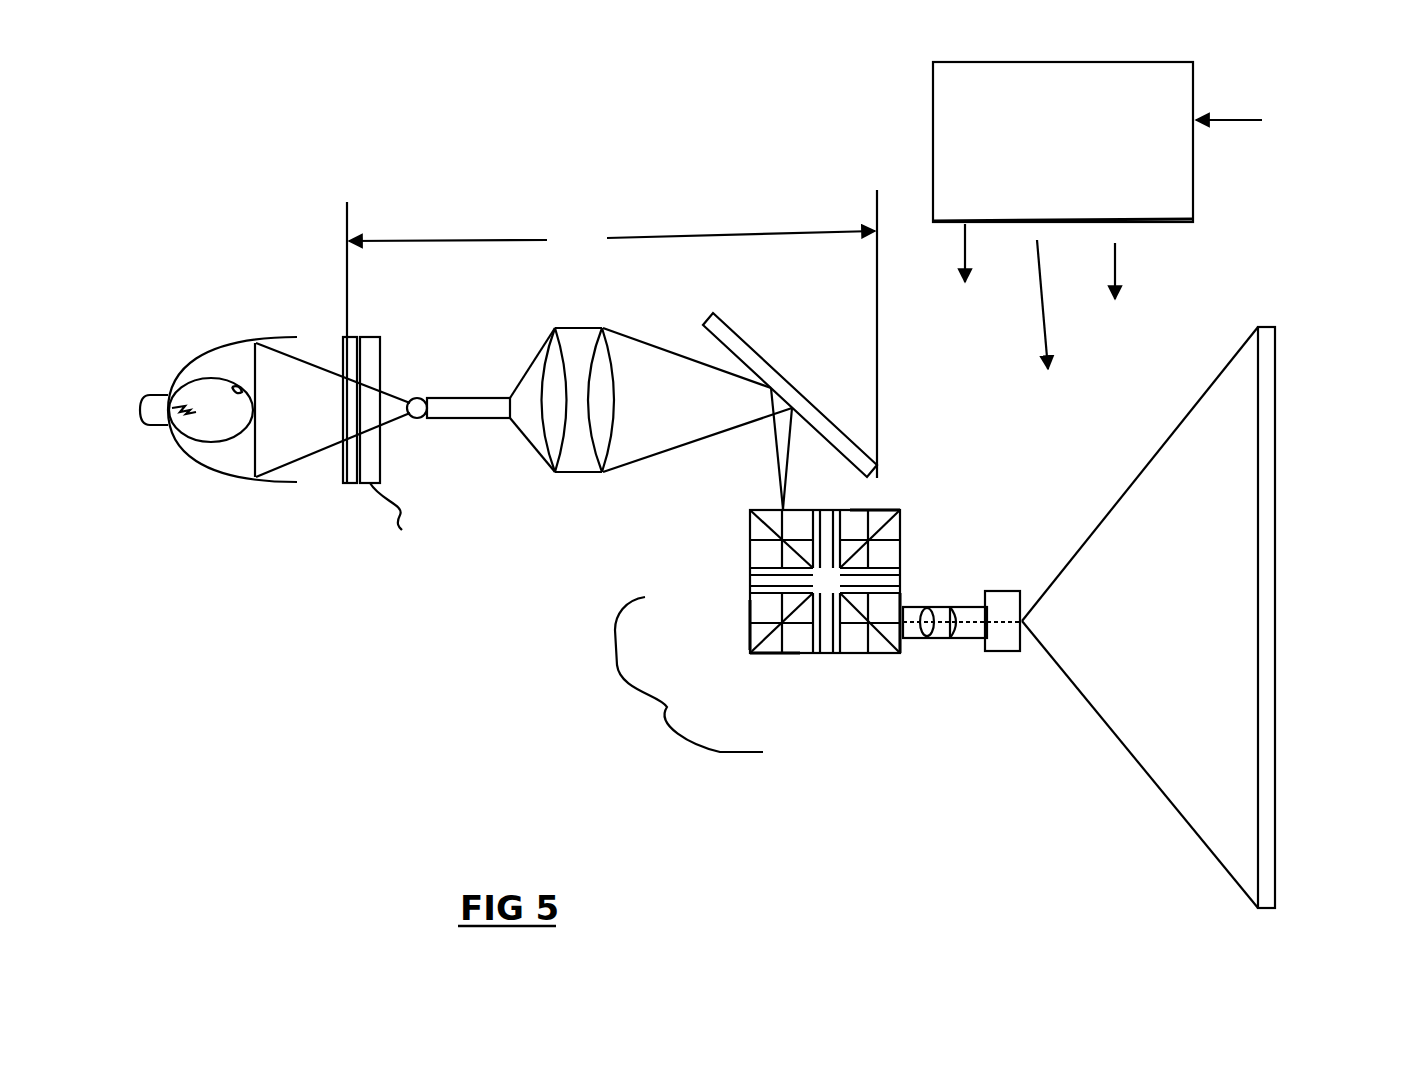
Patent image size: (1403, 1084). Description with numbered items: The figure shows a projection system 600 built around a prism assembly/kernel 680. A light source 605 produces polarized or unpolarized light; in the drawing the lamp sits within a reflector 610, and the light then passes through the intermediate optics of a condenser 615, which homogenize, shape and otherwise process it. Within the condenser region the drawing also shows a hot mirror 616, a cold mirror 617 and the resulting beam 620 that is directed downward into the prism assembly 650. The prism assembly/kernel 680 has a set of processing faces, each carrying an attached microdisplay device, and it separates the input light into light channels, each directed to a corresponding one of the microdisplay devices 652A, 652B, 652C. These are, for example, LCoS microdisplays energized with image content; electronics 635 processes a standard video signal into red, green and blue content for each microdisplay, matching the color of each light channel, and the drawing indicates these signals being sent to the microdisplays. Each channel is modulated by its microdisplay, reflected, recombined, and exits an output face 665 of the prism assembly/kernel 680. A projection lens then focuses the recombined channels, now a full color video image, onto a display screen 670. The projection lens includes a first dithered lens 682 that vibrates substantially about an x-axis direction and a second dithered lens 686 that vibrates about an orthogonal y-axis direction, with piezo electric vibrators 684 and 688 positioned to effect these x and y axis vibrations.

The projection system 600 is at (398, 708).
The light source 605 is at (246, 429).
The reflector 610 is at (314, 414).
The condenser 615 is at (612, 346).
The hot mirror 616 is at (352, 337).
The cold mirror 617 is at (783, 391).
The light beam 620 is at (778, 443).
The electronics 635 is at (1130, 193).
The prism assembly 650 is at (858, 666).
The microdisplay device 652A is at (878, 508).
The microdisplay device 652B is at (750, 628).
The microdisplay device 652C is at (777, 655).
The output face 665 is at (906, 596).
The display screen 670 is at (1268, 326).
The prism assembly/kernel 680 is at (975, 742).
The first dithered lens 682 is at (930, 644).
The piezo electric vibrator 684 is at (921, 640).
The second dithered lens 686 is at (953, 608).
The piezo electric vibrator 688 is at (947, 606).